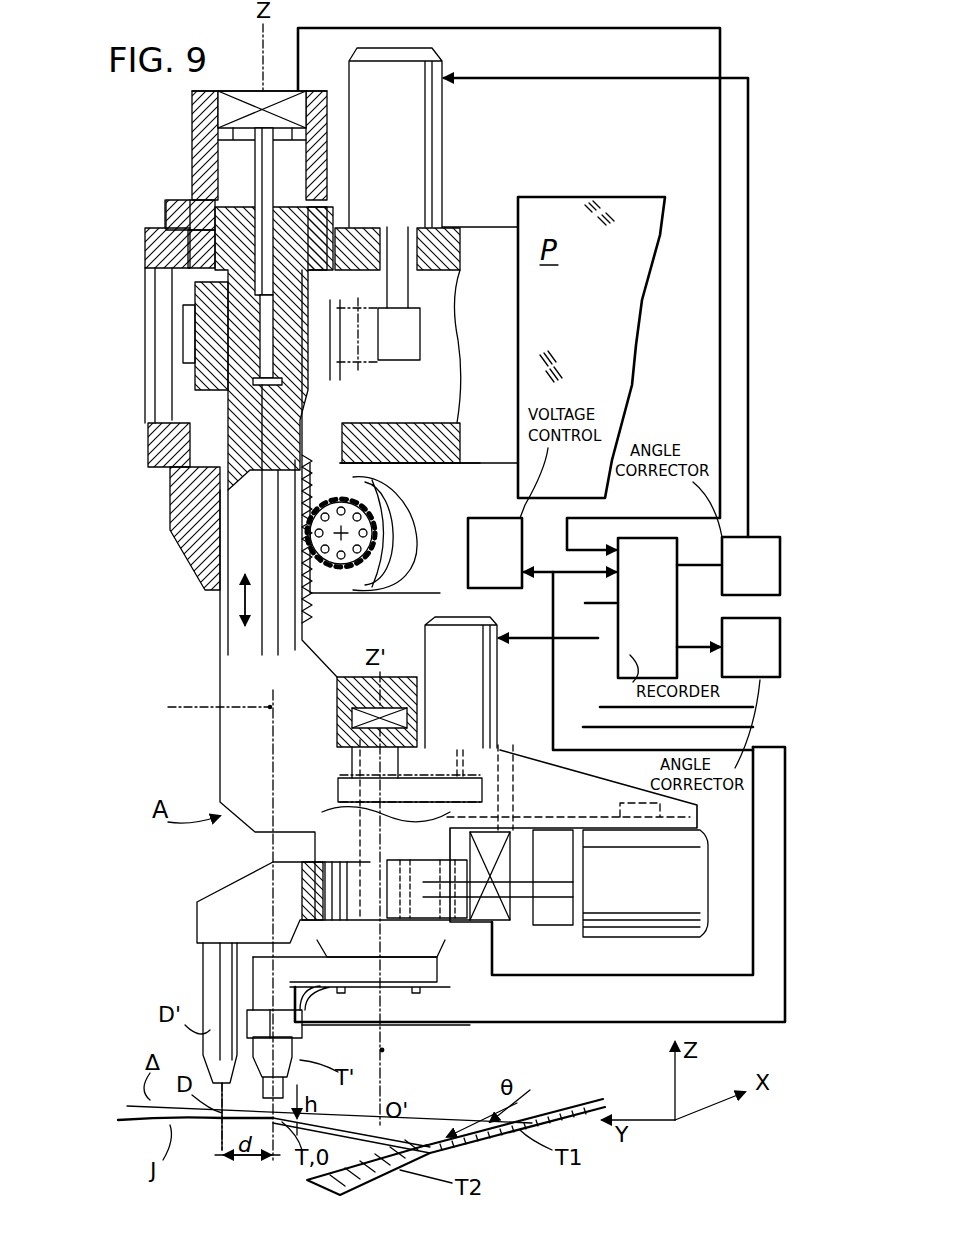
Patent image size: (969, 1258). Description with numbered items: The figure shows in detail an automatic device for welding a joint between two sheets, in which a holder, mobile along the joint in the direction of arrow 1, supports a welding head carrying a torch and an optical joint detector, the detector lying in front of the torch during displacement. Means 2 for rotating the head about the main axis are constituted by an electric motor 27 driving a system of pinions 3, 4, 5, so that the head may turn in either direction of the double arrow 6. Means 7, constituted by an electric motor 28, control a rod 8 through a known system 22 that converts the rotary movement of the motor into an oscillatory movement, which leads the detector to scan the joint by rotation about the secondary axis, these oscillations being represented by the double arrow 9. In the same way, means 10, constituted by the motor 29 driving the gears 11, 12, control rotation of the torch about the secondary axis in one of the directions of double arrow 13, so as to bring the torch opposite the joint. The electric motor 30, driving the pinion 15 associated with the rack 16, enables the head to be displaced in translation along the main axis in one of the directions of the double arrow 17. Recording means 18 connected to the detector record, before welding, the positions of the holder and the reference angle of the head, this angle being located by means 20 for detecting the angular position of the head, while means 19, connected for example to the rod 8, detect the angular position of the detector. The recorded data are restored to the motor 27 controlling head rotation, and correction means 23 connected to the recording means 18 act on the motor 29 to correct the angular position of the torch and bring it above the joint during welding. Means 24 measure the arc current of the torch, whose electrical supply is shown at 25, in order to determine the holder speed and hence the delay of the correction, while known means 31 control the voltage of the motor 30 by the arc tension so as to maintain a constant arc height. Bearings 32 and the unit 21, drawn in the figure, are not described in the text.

The arrow 1 is at (560, 172).
The means for rotating the head 2 is at (456, 170).
The pinion 3 is at (421, 322).
The pinion 4 is at (373, 363).
The pinion 5 is at (336, 358).
The double arrow 6 is at (208, 681).
The means for controlling the rod 7 is at (645, 940).
The rod 8 is at (460, 918).
The double arrow 9 is at (192, 905).
The means for rotating the torch 10 is at (428, 606).
The gear 11 is at (482, 782).
The gear 12 is at (338, 790).
The double arrow 13 is at (302, 1050).
The pinion 15 is at (360, 562).
The rack 16 is at (300, 470).
The double arrow 17 is at (243, 605).
The recording means 18 is at (663, 619).
The means for detecting the angular position of the detector 19 is at (500, 845).
The means for detecting the angular position of the head 20 is at (235, 110).
The angle corrector 21 is at (768, 579).
The system for converting rotary movement 22 is at (553, 908).
The correction means 23 is at (768, 661).
The means for measuring the arc current 24 is at (258, 1012).
The electrical supply 25 is at (448, 990).
The electric motor 27 is at (402, 145).
The electric motor 28 is at (653, 899).
The motor 29 is at (473, 704).
The electric motor 30 is at (410, 505).
The voltage control means 31 is at (511, 566).
The lower bearing 32 is at (352, 720).